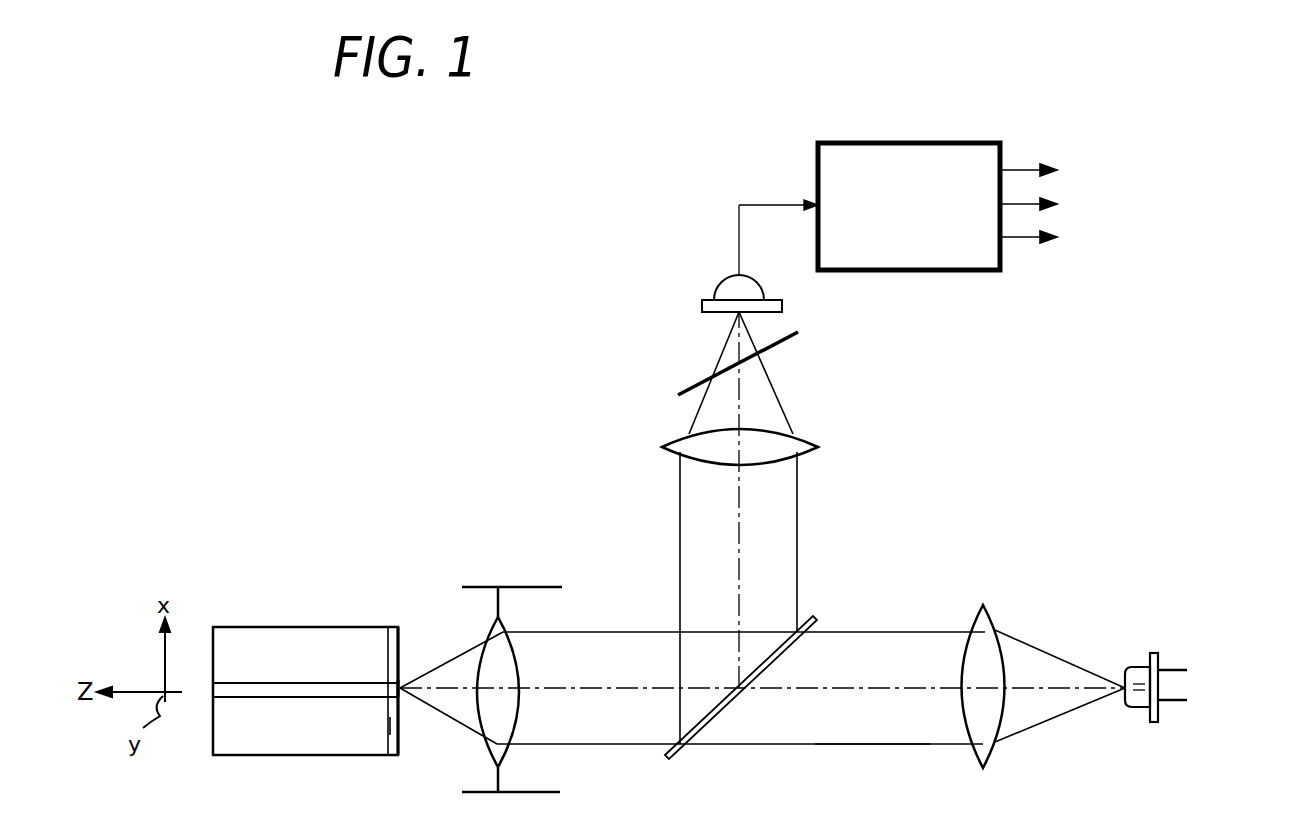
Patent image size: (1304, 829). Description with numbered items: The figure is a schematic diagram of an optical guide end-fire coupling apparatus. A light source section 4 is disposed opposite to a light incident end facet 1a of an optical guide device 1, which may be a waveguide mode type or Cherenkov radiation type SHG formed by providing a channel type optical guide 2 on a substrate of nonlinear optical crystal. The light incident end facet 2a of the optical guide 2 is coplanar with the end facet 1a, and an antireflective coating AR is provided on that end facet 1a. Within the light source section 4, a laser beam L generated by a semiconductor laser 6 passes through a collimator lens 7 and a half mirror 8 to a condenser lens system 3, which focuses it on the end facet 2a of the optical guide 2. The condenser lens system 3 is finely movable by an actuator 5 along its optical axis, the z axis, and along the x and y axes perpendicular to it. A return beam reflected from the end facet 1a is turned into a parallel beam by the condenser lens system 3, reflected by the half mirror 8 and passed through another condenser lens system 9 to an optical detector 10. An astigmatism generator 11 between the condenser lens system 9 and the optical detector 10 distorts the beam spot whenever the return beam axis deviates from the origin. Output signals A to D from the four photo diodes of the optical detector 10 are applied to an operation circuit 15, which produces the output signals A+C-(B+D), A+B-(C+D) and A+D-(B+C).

The optical guide device 1 is at (236, 627).
The light incident end facet 1a is at (400, 726).
The optical guide 2 is at (236, 700).
The light incident end facet 2a is at (408, 668).
The condenser lens system 3 is at (503, 630).
The light source section 4 is at (846, 571).
The actuator 5 is at (513, 793).
The semiconductor laser 6 is at (1138, 667).
The collimator lens 7 is at (985, 615).
The half mirror 8 is at (713, 723).
The condenser lens system 9 is at (808, 442).
The optical detector 10 is at (718, 298).
The astigmatism generator 11 is at (700, 378).
The operation circuit 15 is at (893, 271).
The antireflective coating AR is at (393, 756).
The laser beam L is at (873, 744).